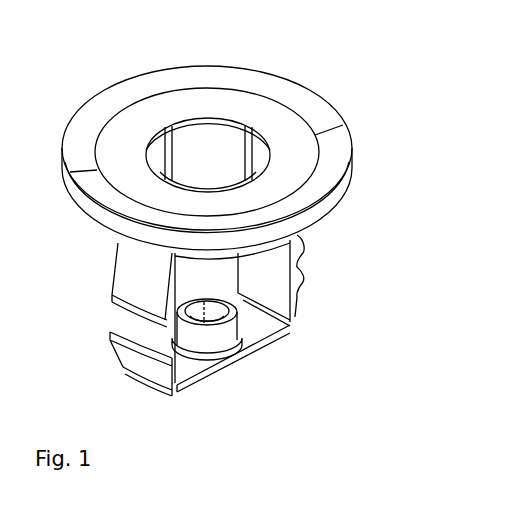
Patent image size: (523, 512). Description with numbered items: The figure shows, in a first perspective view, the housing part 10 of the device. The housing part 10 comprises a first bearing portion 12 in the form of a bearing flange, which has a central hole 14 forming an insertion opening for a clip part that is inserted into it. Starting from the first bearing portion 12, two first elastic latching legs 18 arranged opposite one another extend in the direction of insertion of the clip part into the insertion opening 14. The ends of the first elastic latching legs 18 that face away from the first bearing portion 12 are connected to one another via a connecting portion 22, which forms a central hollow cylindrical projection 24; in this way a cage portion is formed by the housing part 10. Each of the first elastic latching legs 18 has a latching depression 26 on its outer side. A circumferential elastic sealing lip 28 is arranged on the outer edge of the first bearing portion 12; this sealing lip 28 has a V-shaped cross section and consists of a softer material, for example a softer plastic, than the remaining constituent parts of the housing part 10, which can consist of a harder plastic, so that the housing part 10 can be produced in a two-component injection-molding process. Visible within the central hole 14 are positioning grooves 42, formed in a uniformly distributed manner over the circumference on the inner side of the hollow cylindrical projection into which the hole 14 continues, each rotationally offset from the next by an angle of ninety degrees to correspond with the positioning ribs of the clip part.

The housing part 10 is at (413, 165).
The first bearing portion 12 is at (278, 128).
The central hole 14 is at (213, 143).
The first elastic latching legs 18 is at (132, 268).
The connecting portion 22 is at (263, 320).
The central hollow cylindrical projection 24 is at (228, 337).
The latching depression 26 is at (132, 323).
The circumferential elastic sealing lip 28 is at (95, 115).
The positioning grooves 42 is at (169, 158).